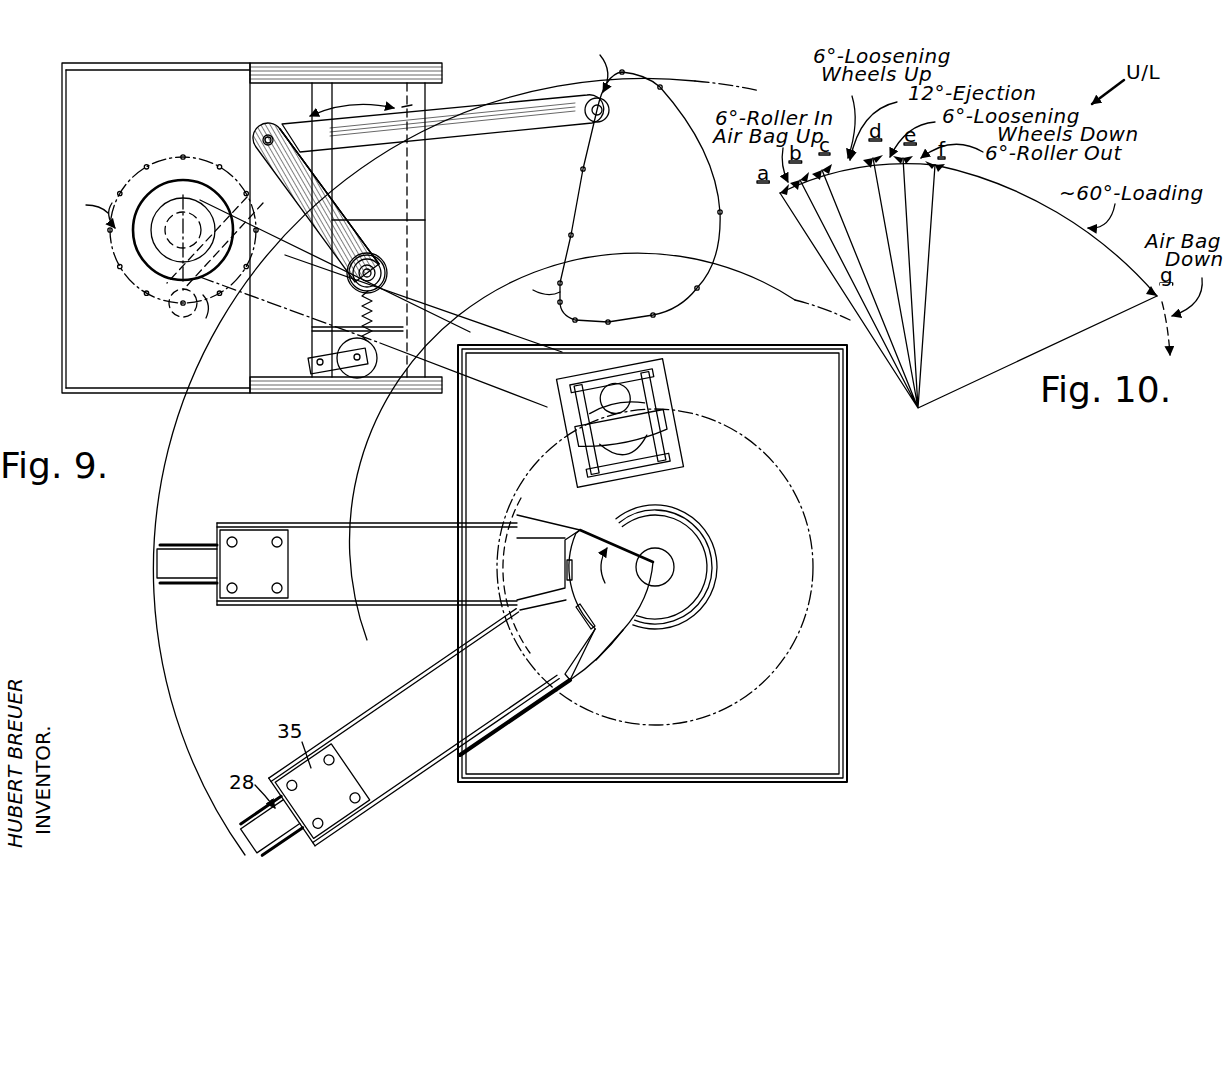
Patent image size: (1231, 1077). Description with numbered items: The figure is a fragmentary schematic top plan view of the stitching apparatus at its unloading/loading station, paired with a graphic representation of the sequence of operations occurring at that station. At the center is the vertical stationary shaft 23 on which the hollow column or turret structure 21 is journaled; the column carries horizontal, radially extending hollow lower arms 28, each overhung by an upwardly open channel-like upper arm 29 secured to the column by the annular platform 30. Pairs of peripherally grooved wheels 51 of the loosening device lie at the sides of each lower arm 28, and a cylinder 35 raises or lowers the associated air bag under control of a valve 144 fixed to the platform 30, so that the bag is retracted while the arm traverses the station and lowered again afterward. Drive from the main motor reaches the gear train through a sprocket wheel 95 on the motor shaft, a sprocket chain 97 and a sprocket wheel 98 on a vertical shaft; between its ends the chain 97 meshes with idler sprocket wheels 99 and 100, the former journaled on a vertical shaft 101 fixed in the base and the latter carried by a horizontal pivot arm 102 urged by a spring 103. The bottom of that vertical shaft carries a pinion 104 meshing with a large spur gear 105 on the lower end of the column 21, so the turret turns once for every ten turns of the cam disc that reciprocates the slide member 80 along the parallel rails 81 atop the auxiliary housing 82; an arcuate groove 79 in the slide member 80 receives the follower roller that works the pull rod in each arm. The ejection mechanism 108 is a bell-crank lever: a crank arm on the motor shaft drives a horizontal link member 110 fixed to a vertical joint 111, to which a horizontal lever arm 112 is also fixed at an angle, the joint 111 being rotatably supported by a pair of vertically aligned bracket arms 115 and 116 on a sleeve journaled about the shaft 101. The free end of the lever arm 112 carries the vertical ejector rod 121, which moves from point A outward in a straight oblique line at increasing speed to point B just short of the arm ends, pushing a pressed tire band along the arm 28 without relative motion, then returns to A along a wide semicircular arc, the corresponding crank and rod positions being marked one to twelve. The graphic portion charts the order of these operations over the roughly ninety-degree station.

The ejection mechanism 108 is at (284, 112).
The vertical joint 111 is at (264, 133).
The sprocket wheel 95 is at (167, 203).
The horizontal link member 110 is at (253, 181).
The bracket arm 115 is at (343, 214).
The bracket arm 116 is at (348, 196).
The horizontal lever arm 112 is at (500, 126).
The vertical ejector rod 121 is at (591, 100).
The vertical shaft 101 is at (374, 262).
The idler sprocket wheel 99 is at (387, 262).
The spring 103 is at (355, 312).
The horizontal pivot arm 102 is at (341, 369).
The idler sprocket wheel 100 is at (380, 375).
The sprocket chain 97 is at (473, 320).
The large spur gear 105 is at (786, 481).
The vertical stationary shaft 23 is at (668, 567).
The upper arm 29 is at (421, 606).
The cylinder 35 is at (257, 598).
The lower arm 28 is at (157, 562).
The grooved wheel 51 is at (172, 545).
The turret structure 21 is at (626, 632).
The valve 144 is at (587, 610).
The annular platform 30 is at (590, 665).
The sprocket wheel 98 is at (618, 369).
The pinion 104 is at (640, 381).
The slide member 80 is at (586, 410).
The arcuate groove 79 is at (588, 438).
The parallel rails 81 is at (640, 459).
The auxiliary housing 82 is at (672, 466).